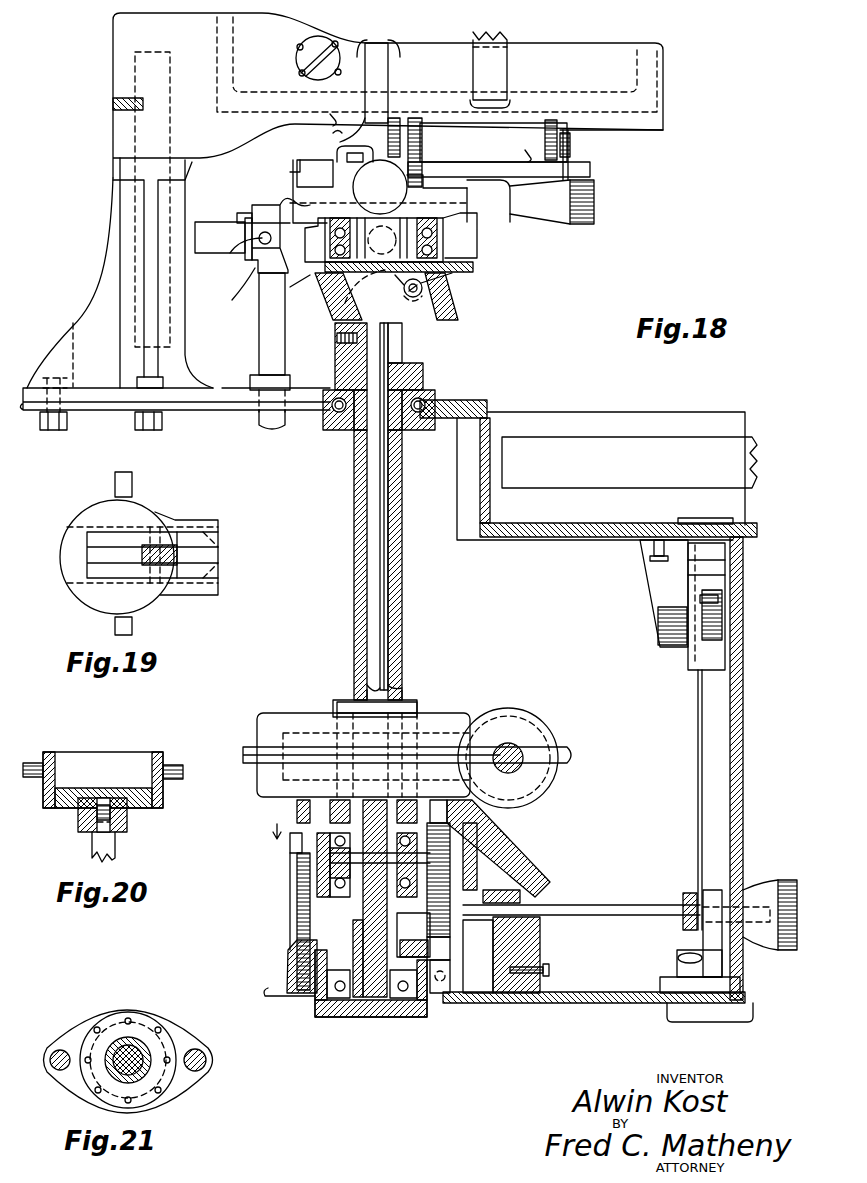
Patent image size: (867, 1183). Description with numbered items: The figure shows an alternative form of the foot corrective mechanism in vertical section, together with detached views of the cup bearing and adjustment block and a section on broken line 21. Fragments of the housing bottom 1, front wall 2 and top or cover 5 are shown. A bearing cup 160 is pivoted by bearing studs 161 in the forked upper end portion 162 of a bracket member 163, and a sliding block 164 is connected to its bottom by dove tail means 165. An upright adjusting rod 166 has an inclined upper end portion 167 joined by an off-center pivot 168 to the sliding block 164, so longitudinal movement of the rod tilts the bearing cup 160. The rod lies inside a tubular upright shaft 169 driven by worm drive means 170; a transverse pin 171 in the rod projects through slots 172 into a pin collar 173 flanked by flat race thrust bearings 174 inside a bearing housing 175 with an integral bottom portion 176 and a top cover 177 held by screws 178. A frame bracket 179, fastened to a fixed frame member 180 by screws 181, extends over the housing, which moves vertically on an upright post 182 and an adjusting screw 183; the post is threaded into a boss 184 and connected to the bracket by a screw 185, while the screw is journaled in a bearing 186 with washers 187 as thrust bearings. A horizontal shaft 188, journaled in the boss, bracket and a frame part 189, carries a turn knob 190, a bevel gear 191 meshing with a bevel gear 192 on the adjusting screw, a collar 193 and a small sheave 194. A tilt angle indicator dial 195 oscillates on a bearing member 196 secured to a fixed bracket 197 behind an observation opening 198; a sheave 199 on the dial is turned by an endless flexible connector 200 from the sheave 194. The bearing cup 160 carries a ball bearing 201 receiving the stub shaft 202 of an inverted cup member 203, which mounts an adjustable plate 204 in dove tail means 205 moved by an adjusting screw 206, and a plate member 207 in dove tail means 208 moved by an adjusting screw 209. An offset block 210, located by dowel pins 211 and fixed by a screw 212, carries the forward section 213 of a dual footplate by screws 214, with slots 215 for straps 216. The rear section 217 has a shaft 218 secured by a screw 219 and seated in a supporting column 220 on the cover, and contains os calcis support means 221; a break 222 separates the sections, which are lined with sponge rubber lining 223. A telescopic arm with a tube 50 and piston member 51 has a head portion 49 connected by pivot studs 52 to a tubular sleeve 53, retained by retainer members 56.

In FIG. 18, the bottom 1 is at (618, 1003).
In FIG. 18, the front wall 2 is at (743, 788).
In FIG. 18, the top portion or cover 5 is at (207, 410).
In FIG. 18, the broken line 21— 21 is at (381, 825).
In FIG. 18, the head portion 49 is at (232, 300).
In FIG. 18, the tube 50 is at (260, 426).
In FIG. 18, the piston member 51 is at (259, 340).
In FIG. 18, the pivot studs 52 is at (206, 253).
In FIG. 18, the tubular sleeve 53 is at (258, 266).
In FIG. 18, the retainer members 56 is at (245, 222).
In FIG. 18, the bearing cup 160 is at (467, 244).
In FIG. 19, the bearing cup 160 is at (164, 519).
In FIG. 20, the bearing cup 160 is at (115, 763).
In FIG. 18, the bearing studs 161 is at (330, 302).
In FIG. 19, the bearing studs 161 is at (132, 484).
In FIG. 20, the bearing studs 161 is at (177, 764).
In FIG. 18, the forked upper end portion 162 is at (268, 275).
In FIG. 18, the bracket member 163 is at (338, 368).
In FIG. 18, the sliding block 164 is at (445, 282).
In FIG. 19, the sliding block 164 is at (88, 554).
In FIG. 20, the sliding block 164 is at (117, 831).
In FIG. 18, the dove tail means 165 is at (473, 271).
In FIG. 19, the dove tail means 165 is at (218, 549).
In FIG. 20, the dove tail means 165 is at (78, 803).
In FIG. 18, the adjusting rod 166 is at (378, 598).
In FIG. 20, the adjusting rod 166 is at (113, 858).
In FIG. 21, the adjusting rod 166 is at (117, 1057).
In FIG. 18, the inclined upper end portion 167 is at (410, 302).
In FIG. 20, the inclined upper end portion 167 is at (100, 828).
In FIG. 18, the pivot 168 is at (421, 297).
In FIG. 19, the pivot 168 is at (172, 595).
In FIG. 20, the pivot 168 is at (127, 818).
In FIG. 18, the tubular upright shaft 169 is at (393, 672).
In FIG. 21, the tubular upright shaft 169 is at (120, 1037).
In FIG. 18, the worm drive means 170 is at (455, 700).
In FIG. 18, the transverse pin 171 is at (330, 857).
In FIG. 18, the slots 172 is at (387, 908).
In FIG. 18, the pin collar 173 is at (323, 866).
In FIG. 18, the flat race thrust bearings 174 is at (300, 850).
In FIG. 18, the bearing housing 175 is at (343, 895).
In FIG. 18, the bottom portion 176 is at (310, 923).
In FIG. 18, the top cover 177 is at (330, 802).
In FIG. 21, the top cover 177 is at (83, 1075).
In FIG. 18, the screws 178 is at (422, 802).
In FIG. 21, the screws 178 is at (170, 1060).
In FIG. 18, the frame bracket 179 is at (565, 866).
In FIG. 18, the fixed frame member 180 is at (548, 934).
In FIG. 18, the screws 181 is at (550, 977).
In FIG. 18, the upright post 182 is at (307, 930).
In FIG. 21, the upright post 182 is at (58, 1058).
In FIG. 18, the adjusting screw 183 is at (505, 850).
In FIG. 21, the adjusting screw 183 is at (203, 1057).
In FIG. 18, the boss 184 is at (292, 959).
In FIG. 18, the screw 185 is at (292, 843).
In FIG. 18, the bearing 186 is at (450, 992).
In FIG. 18, the washers 187 is at (470, 812).
In FIG. 18, the horizontal shaft 188 is at (608, 905).
In FIG. 18, the frame part 189 is at (693, 952).
In FIG. 18, the turn knob 190 is at (777, 940).
In FIG. 18, the bevel gear 191 is at (540, 890).
In FIG. 18, the bevel gear 192 is at (418, 945).
In FIG. 18, the collar 193 is at (570, 898).
In FIG. 18, the sheave 194 is at (677, 895).
In FIG. 18, the tilt angle indicator dial 195 is at (720, 658).
In FIG. 18, the bearing member 196 is at (667, 646).
In FIG. 18, the fixed bracket 197 is at (662, 614).
In FIG. 18, the observation opening 198 is at (703, 526).
In FIG. 18, the sheave 199 is at (715, 598).
In FIG. 18, the endless flexible connector 200 is at (697, 791).
In FIG. 18, the ball bearing 201 is at (473, 224).
In FIG. 18, the stub shaft 202 is at (389, 219).
In FIG. 18, the inverted cup member 203 is at (292, 200).
In FIG. 18, the adjustable plate 204 is at (293, 174).
In FIG. 18, the dove tail means 205 is at (450, 201).
In FIG. 18, the adjusting screw 206 is at (560, 234).
In FIG. 18, the plate member 207 is at (300, 158).
In FIG. 18, the dove tail means 208 is at (318, 160).
In FIG. 18, the adjusting screw 209 is at (363, 146).
In FIG. 18, the offset block 210 is at (493, 142).
In FIG. 18, the dowel pins 211 is at (435, 129).
In FIG. 18, the screw 212 is at (405, 148).
In FIG. 18, the forward section 213 is at (588, 53).
In FIG. 18, the screws 214 is at (404, 114).
In FIG. 18, the slots 215 is at (507, 105).
In FIG. 18, the straps 216 is at (503, 64).
In FIG. 18, the rear section 217 is at (130, 23).
In FIG. 18, the shaft 218 is at (140, 137).
In FIG. 18, the screw 219 is at (120, 110).
In FIG. 18, the supporting column 220 is at (107, 298).
In FIG. 18, the os calcis support means 221 is at (333, 38).
In FIG. 18, the break 222 is at (393, 42).
In FIG. 18, the lining 223 is at (378, 78).